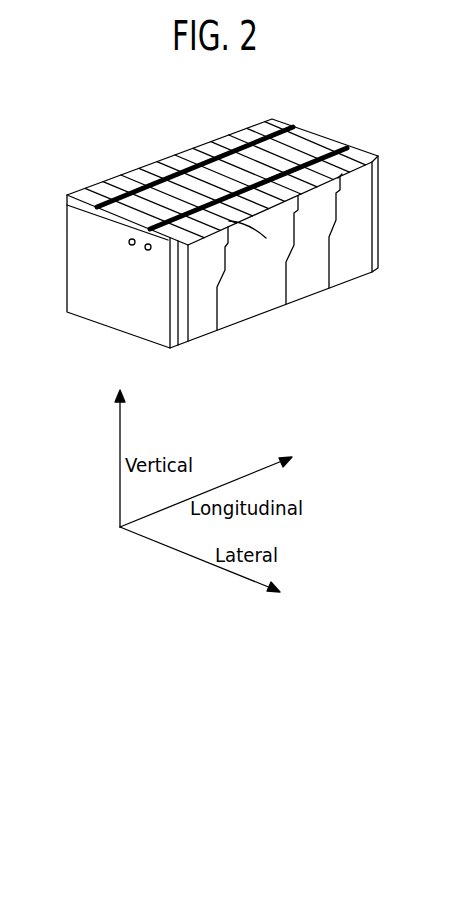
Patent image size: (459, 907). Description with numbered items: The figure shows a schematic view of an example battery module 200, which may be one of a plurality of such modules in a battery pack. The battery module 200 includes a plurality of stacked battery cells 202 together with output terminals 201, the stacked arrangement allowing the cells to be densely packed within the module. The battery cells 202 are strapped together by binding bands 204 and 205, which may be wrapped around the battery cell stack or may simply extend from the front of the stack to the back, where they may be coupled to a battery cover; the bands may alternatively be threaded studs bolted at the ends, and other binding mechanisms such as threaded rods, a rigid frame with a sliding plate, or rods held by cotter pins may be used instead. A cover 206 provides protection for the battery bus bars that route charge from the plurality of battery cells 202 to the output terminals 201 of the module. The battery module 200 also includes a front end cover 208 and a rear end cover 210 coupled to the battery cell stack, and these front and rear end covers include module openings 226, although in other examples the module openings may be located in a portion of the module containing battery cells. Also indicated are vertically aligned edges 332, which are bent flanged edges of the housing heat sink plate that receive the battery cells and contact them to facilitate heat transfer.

The battery module 200 is at (133, 106).
The output terminals 201 is at (148, 251).
The battery cells 202 is at (233, 173).
The binding band 204 is at (264, 120).
The binding band 205 is at (343, 170).
The cover 206 is at (202, 339).
The front end cover 208 is at (113, 330).
The rear end cover 210 is at (355, 147).
The module openings 226 is at (150, 229).
The vertically aligned edges 332 is at (260, 241).